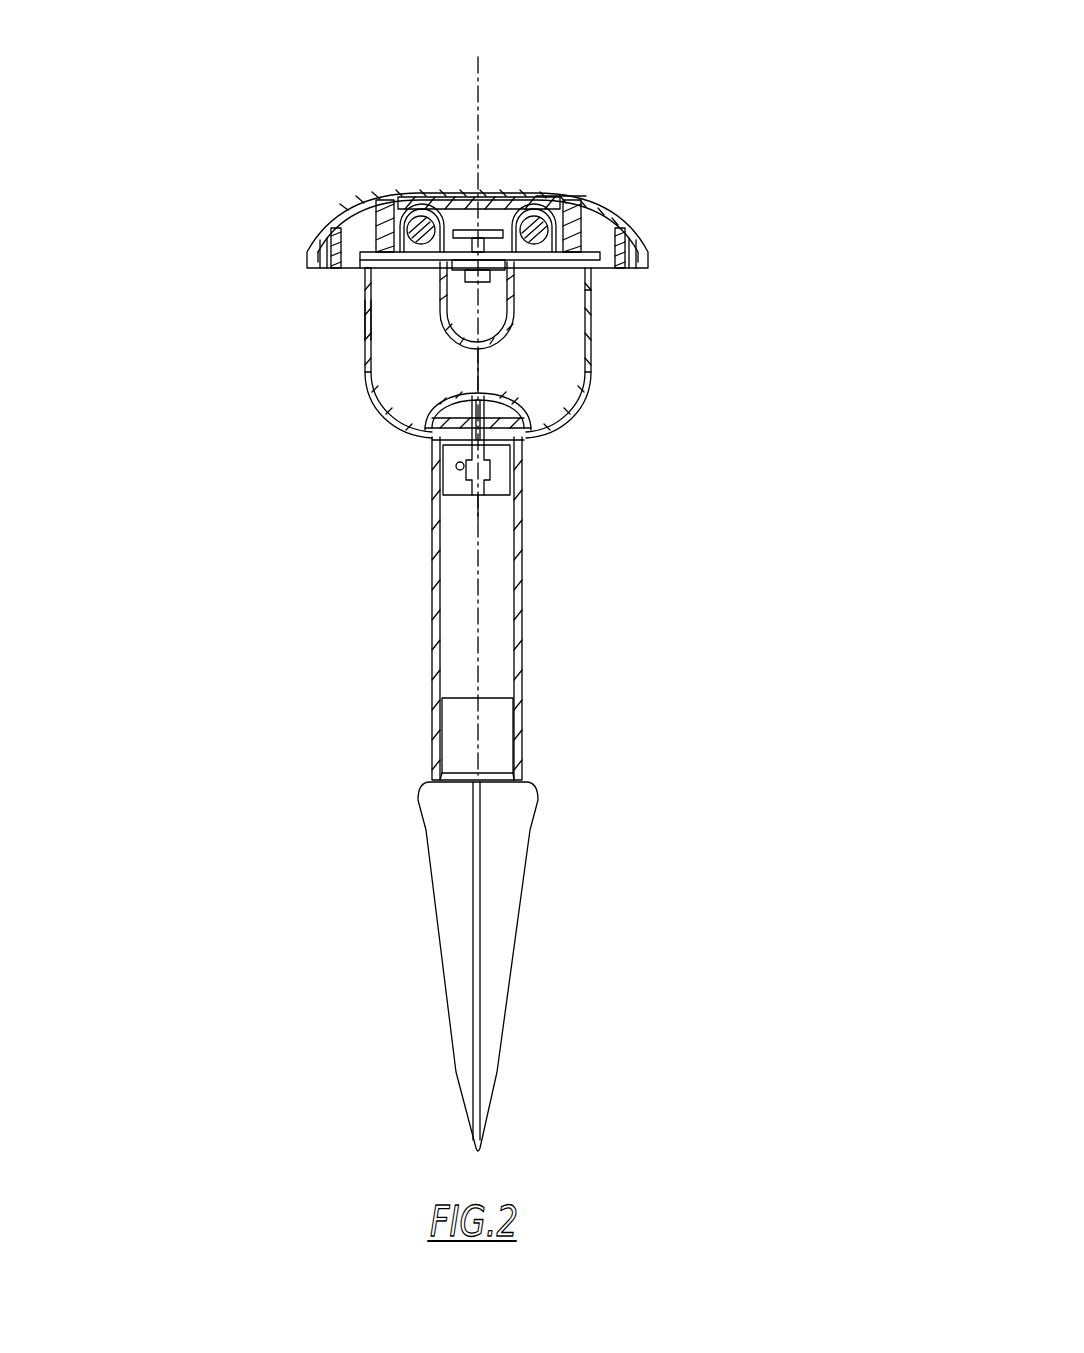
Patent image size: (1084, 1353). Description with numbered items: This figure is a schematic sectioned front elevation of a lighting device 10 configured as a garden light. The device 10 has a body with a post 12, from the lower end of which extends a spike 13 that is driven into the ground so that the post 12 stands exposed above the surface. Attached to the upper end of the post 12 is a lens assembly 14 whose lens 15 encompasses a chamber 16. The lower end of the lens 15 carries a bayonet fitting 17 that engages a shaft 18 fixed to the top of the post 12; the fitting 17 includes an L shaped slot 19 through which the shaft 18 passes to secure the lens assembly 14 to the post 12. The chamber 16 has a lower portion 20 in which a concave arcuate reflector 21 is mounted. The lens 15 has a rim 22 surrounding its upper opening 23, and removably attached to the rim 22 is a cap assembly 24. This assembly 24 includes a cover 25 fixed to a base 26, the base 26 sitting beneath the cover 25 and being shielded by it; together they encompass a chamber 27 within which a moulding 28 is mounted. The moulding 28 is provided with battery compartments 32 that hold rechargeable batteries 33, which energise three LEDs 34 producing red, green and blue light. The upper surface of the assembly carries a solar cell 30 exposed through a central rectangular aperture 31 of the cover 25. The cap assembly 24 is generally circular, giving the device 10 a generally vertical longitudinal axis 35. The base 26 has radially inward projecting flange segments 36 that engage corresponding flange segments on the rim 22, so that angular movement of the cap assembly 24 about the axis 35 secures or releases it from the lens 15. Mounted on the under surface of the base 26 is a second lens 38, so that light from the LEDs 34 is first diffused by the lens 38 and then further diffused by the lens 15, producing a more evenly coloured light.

The lighting device 10 is at (680, 474).
The post 12 is at (521, 612).
The spike 13 is at (498, 905).
The lens assembly 14 is at (376, 395).
The lens 15 is at (366, 340).
The chamber 16 is at (446, 388).
The bayonet fitting 17 is at (500, 462).
The shaft 18 is at (458, 470).
The L shaped slot 19 is at (478, 497).
The lower portion 20 is at (545, 392).
The arcuate reflector 21 is at (546, 432).
The rim 22 is at (365, 325).
The upper opening 23 is at (556, 290).
The cap assembly 24 is at (644, 226).
The cover 25 is at (600, 198).
The base 26 is at (362, 268).
The chamber 27 is at (500, 196).
The moulding 28 is at (462, 196).
The solar cell 30 is at (522, 200).
The central rectangular aperture 31 is at (472, 196).
The battery compartments 32 is at (396, 210).
The rechargeable batteries 33 is at (368, 204).
The LEDs 34 is at (478, 284).
The longitudinal axis 35 is at (482, 80).
The flange segments 36 is at (363, 272).
The second lens 38 is at (460, 272).